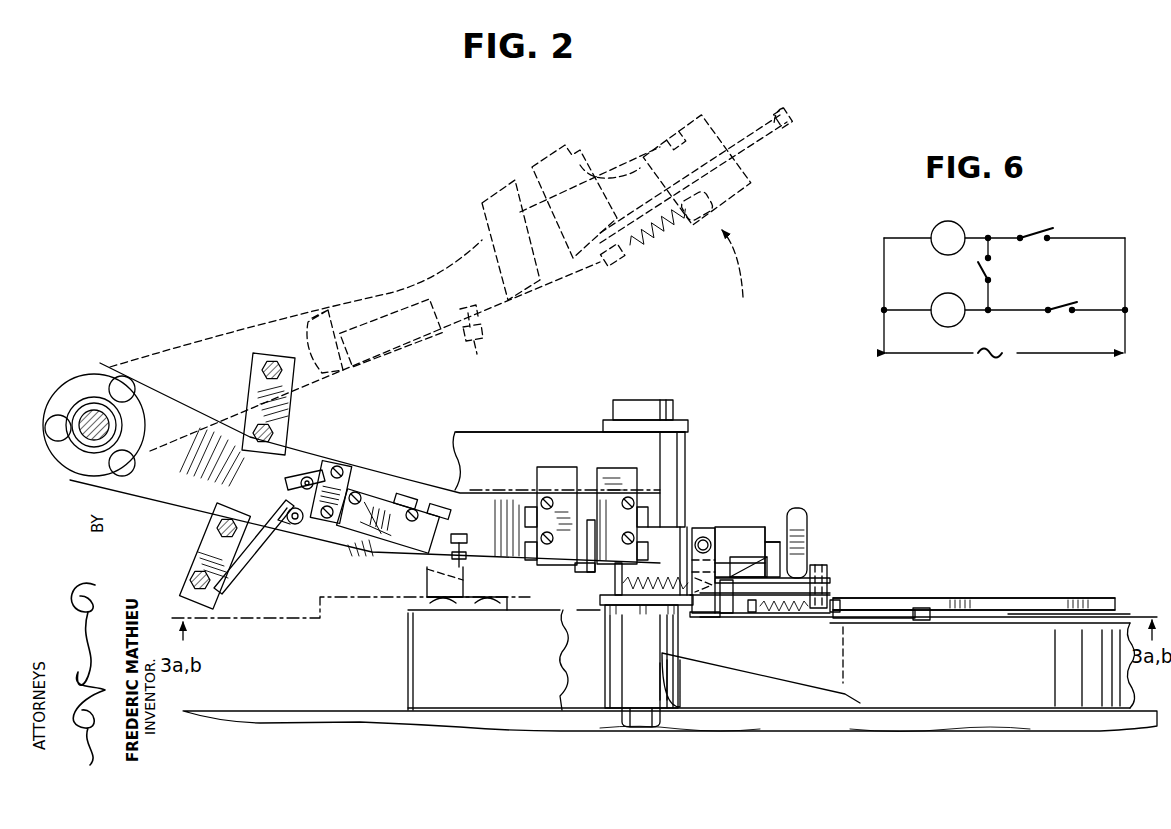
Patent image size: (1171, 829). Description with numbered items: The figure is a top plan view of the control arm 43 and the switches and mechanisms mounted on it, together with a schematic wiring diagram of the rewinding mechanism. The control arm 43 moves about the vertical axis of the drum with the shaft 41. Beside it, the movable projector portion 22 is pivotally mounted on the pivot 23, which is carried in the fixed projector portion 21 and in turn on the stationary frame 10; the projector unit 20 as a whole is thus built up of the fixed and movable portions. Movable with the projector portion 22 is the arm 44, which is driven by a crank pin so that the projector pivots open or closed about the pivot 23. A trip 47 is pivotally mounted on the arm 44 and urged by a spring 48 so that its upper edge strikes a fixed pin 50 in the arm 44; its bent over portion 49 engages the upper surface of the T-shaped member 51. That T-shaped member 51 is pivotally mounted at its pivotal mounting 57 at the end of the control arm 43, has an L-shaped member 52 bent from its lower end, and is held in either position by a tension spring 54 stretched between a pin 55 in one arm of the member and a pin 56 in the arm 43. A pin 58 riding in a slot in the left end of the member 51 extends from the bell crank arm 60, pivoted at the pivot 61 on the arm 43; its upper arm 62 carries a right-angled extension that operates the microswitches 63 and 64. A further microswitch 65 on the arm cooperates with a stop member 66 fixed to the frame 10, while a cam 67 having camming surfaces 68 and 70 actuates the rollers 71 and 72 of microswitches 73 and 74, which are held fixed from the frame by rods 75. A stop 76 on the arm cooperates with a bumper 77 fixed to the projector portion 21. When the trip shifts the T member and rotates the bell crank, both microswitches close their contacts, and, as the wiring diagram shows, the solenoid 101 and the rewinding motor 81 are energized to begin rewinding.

In FIG. 2, the stationary frame 10 is at (347, 714).
In FIG. 2, the solenoid actuator unit 20 is at (485, 428).
In FIG. 2, the fixed projector portion 21 is at (898, 672).
In FIG. 2, the movable projector portion 22 is at (513, 440).
In FIG. 2, the pivot 23 is at (655, 410).
In FIG. 2, the shaft 41 is at (110, 426).
In FIG. 2, the control arm 43 is at (420, 276).
In FIG. 2, the arm 44 is at (988, 600).
In FIG. 2, the trip 47 is at (848, 610).
In FIG. 2, the spring 48 is at (776, 613).
In FIG. 2, the bent over portion 49 is at (820, 566).
In FIG. 2, the fixed pin 50 is at (928, 620).
In FIG. 2, the T-shaped member 51 is at (736, 576).
In FIG. 2, the L-shaped member 52 is at (806, 522).
In FIG. 2, the tension spring 54 is at (652, 576).
In FIG. 2, the pin 55 is at (834, 596).
In FIG. 2, the pin 56 is at (625, 606).
In FIG. 2, the pivotal mounting 57 is at (776, 532).
In FIG. 2, the pin 58 is at (724, 614).
In FIG. 2, the bell crank arm 60 is at (608, 575).
In FIG. 2, the pivot 61 is at (578, 569).
In FIG. 2, the upper arm 62 is at (593, 536).
In FIG. 2, the microswitch 63 is at (558, 470).
In FIG. 6, the microswitch 63 is at (992, 271).
In FIG. 2, the microswitch 64 is at (630, 450).
In FIG. 6, the microswitch 64 is at (1035, 233).
In FIG. 2, the microswitch 65 is at (385, 532).
In FIG. 6, the microswitch 65 is at (1073, 304).
In FIG. 2, the stop member 66 is at (455, 586).
In FIG. 2, the cam 67 is at (346, 474).
In FIG. 2, the camming surface 68 is at (338, 468).
In FIG. 2, the camming surface 70 is at (300, 522).
In FIG. 2, the roller 71 is at (310, 477).
In FIG. 2, the roller 72 is at (288, 530).
In FIG. 2, the microswitch 73 is at (250, 400).
In FIG. 2, the microswitch 74 is at (210, 550).
In FIG. 2, the rods 75 is at (272, 368).
In FIG. 2, the stop 76 is at (708, 532).
In FIG. 2, the bumper 77 is at (705, 616).
In FIG. 6, the rewinding motor 81 is at (936, 296).
In FIG. 6, the solenoid 101 is at (950, 221).